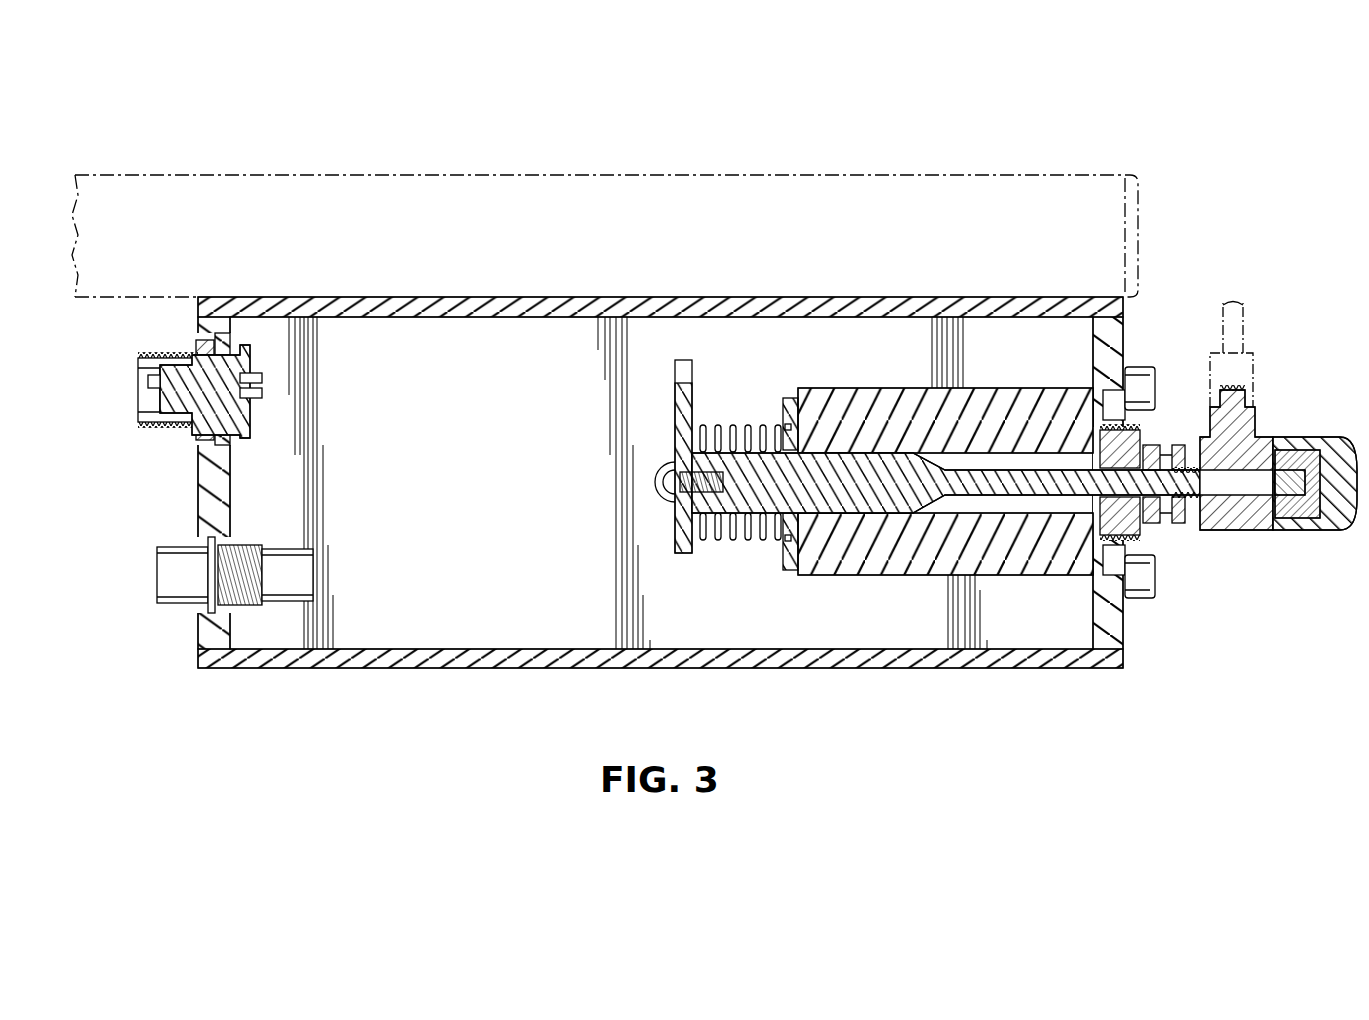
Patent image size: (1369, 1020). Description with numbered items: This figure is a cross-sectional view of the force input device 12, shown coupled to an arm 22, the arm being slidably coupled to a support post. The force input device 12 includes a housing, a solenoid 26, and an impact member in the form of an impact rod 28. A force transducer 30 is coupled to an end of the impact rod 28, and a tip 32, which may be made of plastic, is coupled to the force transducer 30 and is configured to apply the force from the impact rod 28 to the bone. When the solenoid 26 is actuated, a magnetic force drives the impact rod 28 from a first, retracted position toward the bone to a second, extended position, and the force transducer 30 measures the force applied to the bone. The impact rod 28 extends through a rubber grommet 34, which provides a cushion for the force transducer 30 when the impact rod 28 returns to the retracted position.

The force input device 12 is at (96, 130).
The arm 22 is at (841, 176).
The solenoid 26 is at (880, 577).
The impact rod 28 is at (993, 470).
The force transducer 30 is at (1243, 531).
The tip 32 is at (1331, 531).
The rubber grommet 34 is at (1177, 525).